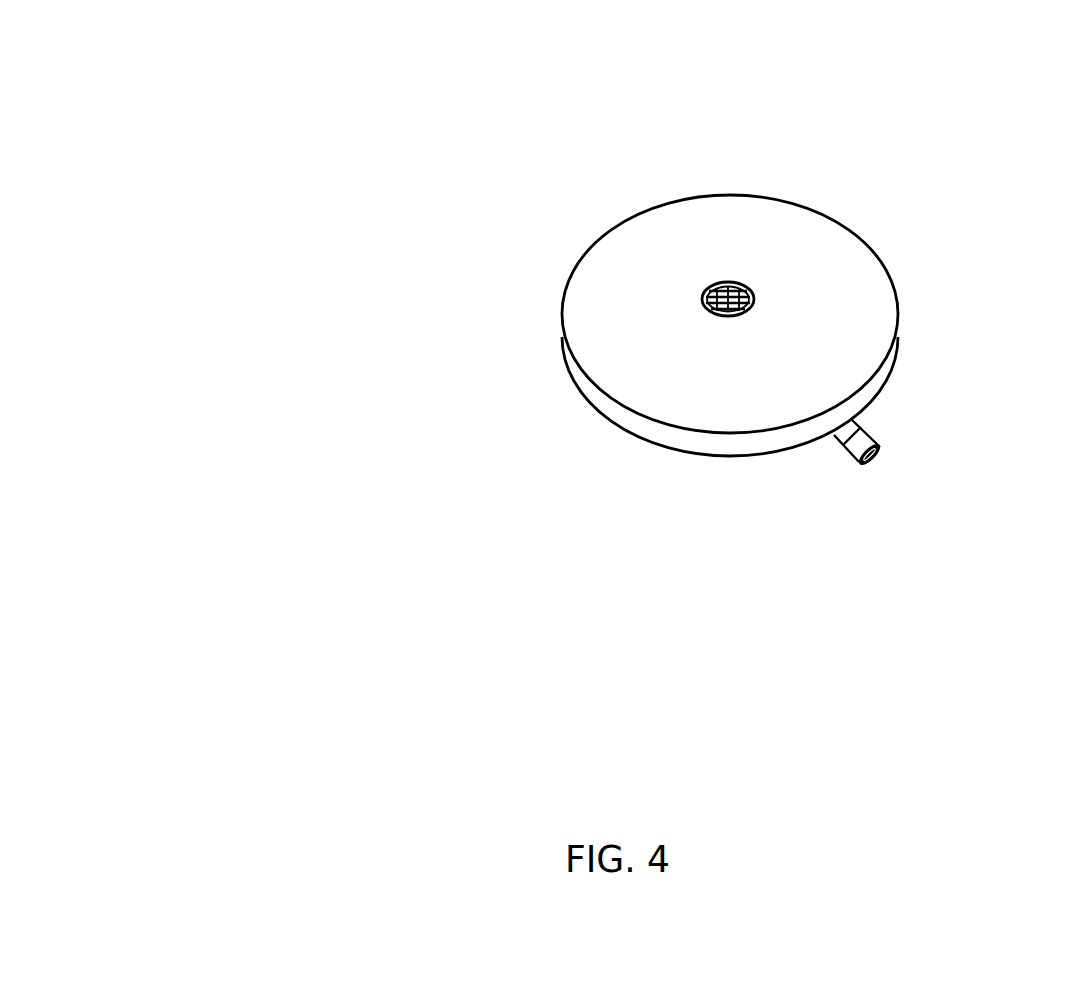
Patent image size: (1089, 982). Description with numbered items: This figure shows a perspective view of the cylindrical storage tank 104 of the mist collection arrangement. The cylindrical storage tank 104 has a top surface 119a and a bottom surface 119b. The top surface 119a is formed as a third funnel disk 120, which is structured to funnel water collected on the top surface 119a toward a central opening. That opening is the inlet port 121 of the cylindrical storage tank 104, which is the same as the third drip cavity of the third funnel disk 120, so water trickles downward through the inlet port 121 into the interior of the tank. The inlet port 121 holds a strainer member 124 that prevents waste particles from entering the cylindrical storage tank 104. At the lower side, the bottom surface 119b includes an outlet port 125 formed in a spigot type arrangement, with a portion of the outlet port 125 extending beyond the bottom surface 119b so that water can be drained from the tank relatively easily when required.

The cylindrical storage tank 104 is at (296, 97).
The third funnel disk 120 is at (607, 233).
The top surface 119a is at (685, 347).
The bottom surface 119b is at (770, 453).
The strainer member 124 is at (720, 282).
The inlet port 121 is at (752, 256).
The outlet port 125 is at (863, 430).